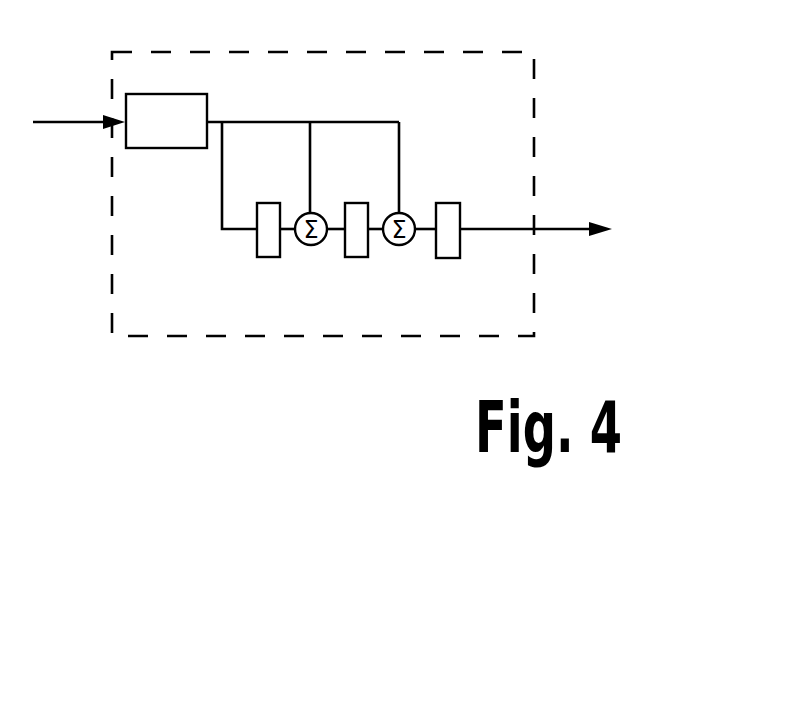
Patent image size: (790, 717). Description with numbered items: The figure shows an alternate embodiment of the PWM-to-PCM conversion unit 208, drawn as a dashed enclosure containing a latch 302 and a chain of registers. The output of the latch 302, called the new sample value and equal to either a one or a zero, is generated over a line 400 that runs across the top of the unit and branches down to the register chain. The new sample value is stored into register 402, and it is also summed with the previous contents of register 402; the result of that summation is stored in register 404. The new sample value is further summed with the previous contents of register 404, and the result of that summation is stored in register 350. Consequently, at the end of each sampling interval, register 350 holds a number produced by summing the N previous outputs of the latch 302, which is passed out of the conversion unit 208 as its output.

The PWM-to-PCM conversion unit 208 is at (400, 52).
The latch 302 is at (165, 148).
The line 400 is at (262, 122).
The register 402 is at (268, 257).
The register 404 is at (355, 257).
The register 350 is at (446, 258).